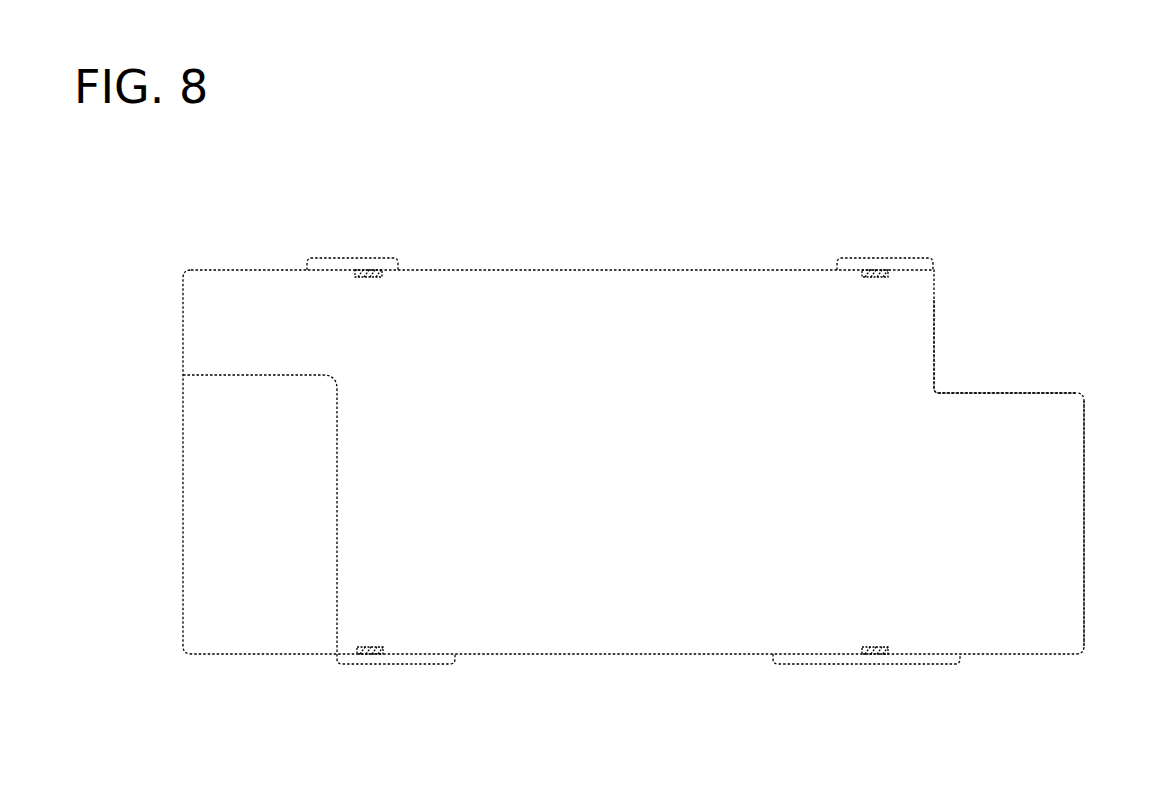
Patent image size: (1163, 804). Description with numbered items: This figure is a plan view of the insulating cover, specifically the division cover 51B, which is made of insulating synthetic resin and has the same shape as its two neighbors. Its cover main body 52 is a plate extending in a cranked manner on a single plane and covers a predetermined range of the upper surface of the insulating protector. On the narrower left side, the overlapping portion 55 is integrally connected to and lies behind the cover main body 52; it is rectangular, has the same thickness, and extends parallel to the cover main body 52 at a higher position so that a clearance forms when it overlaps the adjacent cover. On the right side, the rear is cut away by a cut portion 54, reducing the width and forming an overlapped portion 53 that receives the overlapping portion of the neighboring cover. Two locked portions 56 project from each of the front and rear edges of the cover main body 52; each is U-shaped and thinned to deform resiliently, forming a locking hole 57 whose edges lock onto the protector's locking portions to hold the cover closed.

The division cover 51B is at (629, 222).
The cover main body 52 is at (658, 608).
The overlapped portion 53 is at (1055, 530).
The cut portion 54 is at (1002, 392).
The overlapping portion 55 is at (263, 630).
The locked portion 56 is at (350, 257).
The locking hole 57 is at (375, 270).